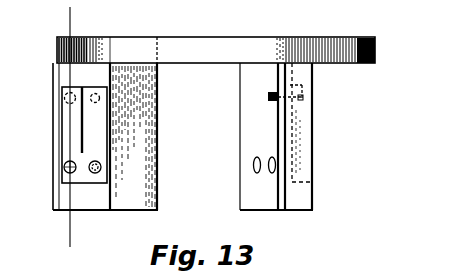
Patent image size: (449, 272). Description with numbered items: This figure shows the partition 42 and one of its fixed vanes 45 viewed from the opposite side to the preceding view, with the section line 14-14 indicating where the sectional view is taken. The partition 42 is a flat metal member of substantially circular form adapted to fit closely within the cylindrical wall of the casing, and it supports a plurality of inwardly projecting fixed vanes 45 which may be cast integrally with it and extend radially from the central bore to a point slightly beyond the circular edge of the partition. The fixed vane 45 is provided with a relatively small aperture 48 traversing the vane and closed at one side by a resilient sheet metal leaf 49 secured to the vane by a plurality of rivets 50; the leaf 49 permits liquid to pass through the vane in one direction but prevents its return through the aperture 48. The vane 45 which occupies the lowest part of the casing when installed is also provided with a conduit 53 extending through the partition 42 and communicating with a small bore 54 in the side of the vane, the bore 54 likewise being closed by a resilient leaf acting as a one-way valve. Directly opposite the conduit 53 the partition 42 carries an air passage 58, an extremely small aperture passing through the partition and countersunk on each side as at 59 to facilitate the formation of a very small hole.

The section line 14- 14 is at (82, 17).
The partition 42 is at (189, 42).
The fixed vane 45 is at (63, 197).
The aperture 48 is at (268, 97).
The resilient sheet metal leaf 49 is at (95, 128).
The rivets 50 is at (96, 172).
The conduit 53 is at (57, 53).
The bore 54 is at (62, 97).
The air passage 58 is at (378, 52).
The countersink 59 is at (363, 65).